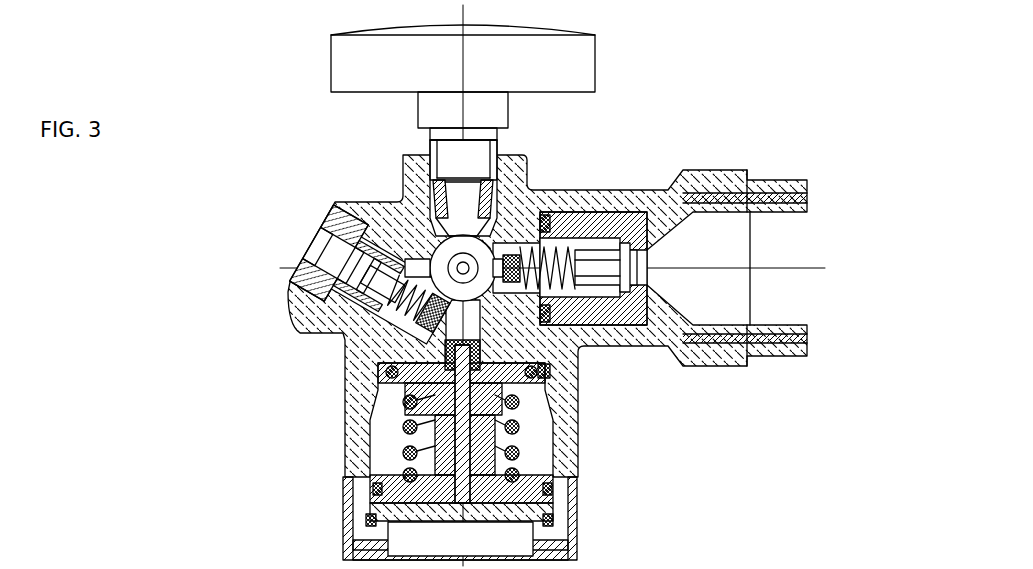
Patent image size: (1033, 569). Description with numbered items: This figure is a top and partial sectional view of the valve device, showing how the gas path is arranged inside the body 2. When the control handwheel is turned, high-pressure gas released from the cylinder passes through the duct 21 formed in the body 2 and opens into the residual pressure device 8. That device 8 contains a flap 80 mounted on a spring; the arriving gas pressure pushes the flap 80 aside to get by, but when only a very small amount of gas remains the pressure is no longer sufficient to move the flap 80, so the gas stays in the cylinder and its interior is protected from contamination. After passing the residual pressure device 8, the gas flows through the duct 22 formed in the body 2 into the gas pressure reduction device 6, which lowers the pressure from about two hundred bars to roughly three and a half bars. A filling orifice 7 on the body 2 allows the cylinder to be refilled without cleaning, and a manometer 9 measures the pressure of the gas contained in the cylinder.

The body 2 is at (567, 428).
The gas pressure reduction device 6 is at (592, 534).
The filling orifice 7 is at (787, 235).
The residual pressure device 8 is at (300, 231).
The manometer 9 is at (570, 72).
The duct 21 is at (421, 246).
The duct 22 is at (548, 366).
The flap 80 is at (336, 203).